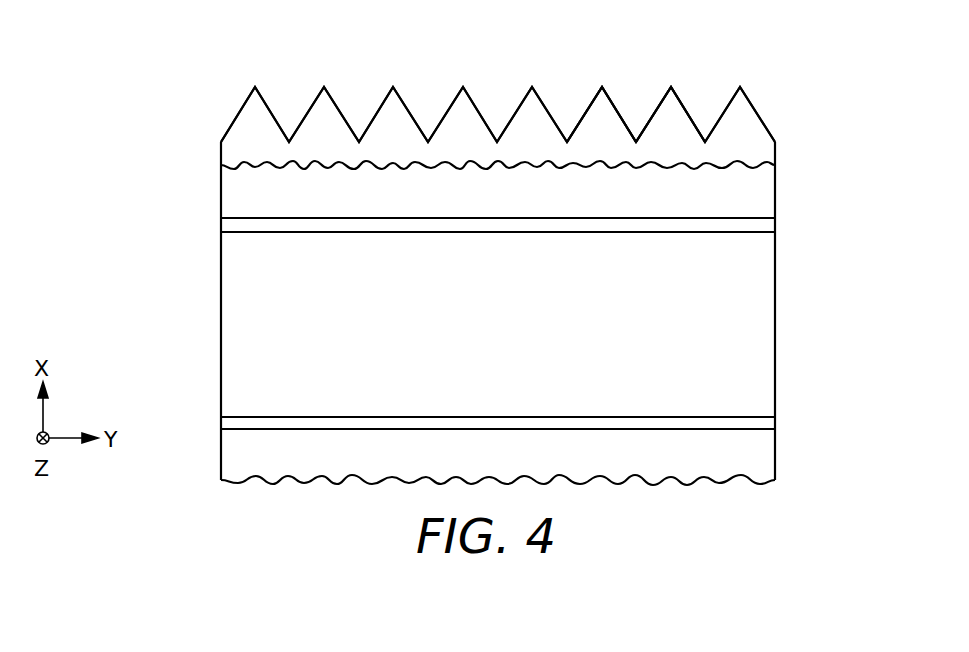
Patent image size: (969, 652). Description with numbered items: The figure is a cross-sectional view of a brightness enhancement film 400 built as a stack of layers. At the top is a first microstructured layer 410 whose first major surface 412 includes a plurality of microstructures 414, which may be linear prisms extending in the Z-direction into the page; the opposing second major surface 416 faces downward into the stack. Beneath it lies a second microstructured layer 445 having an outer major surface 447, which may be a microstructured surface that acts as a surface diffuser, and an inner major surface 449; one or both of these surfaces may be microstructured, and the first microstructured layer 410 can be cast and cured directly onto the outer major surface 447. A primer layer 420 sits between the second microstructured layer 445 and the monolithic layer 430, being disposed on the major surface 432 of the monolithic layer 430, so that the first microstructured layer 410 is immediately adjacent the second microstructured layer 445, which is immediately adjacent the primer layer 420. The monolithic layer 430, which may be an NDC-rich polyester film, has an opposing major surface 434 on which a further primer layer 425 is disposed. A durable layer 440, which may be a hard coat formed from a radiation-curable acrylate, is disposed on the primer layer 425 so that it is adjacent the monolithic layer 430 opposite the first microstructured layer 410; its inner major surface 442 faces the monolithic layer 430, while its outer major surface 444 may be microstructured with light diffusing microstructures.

The brightness enhancement film 400 is at (201, 71).
The first microstructured layer 410 is at (760, 152).
The first major surface 412 is at (683, 103).
The microstructures 414 is at (592, 101).
The second major surface 416 is at (718, 165).
The primer layer 420 is at (232, 222).
The primer layer 425 is at (762, 422).
The monolithic layer 430 is at (253, 330).
The major surface 432 is at (255, 233).
The opposing major surface 434 is at (257, 417).
The durable layer 440 is at (762, 458).
The inner major surface 442 is at (669, 429).
The outer major surface 444 is at (297, 478).
The second microstructured layer 445 is at (478, 192).
The outer major surface 447 is at (388, 165).
The inner major surface 449 is at (735, 220).